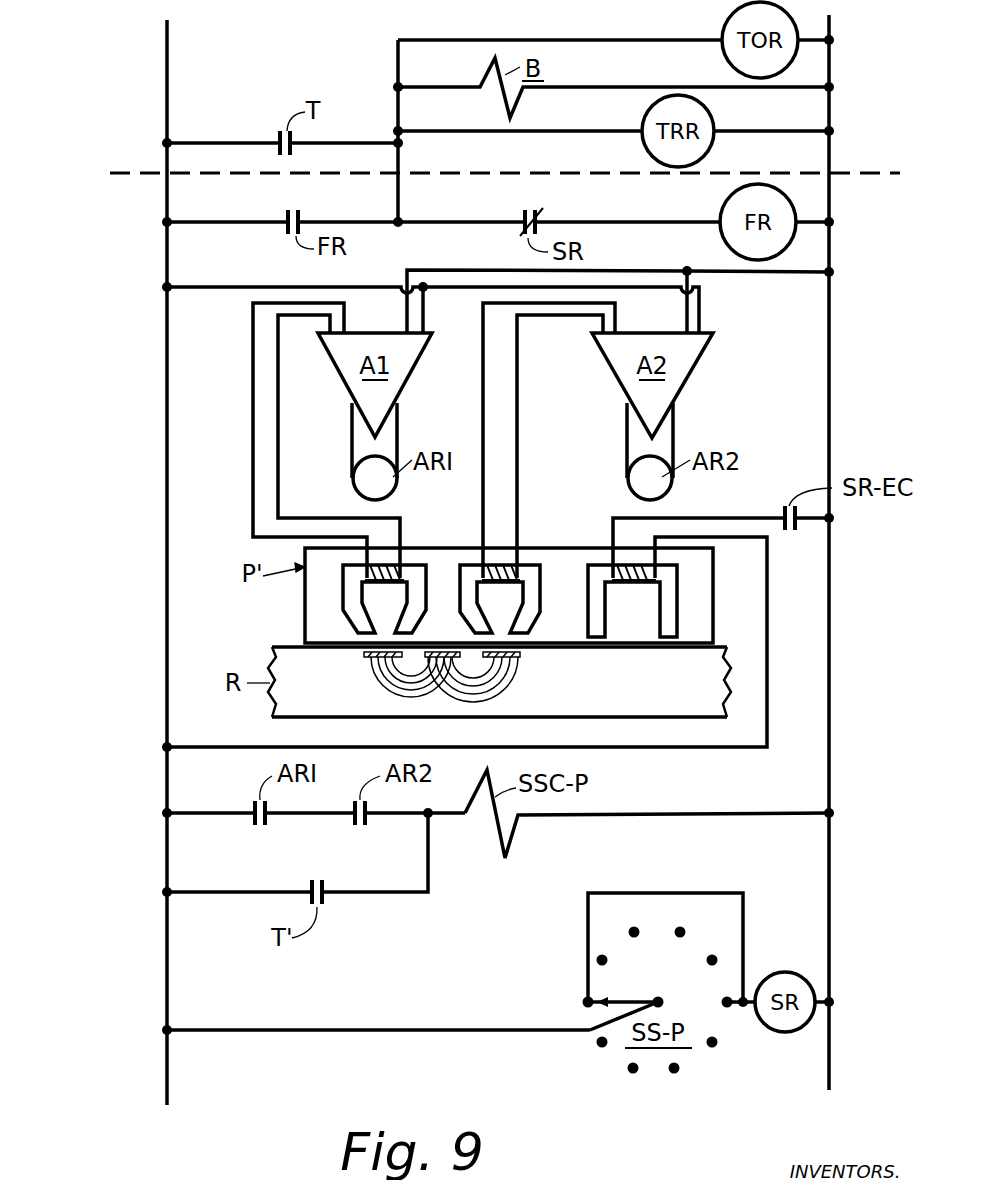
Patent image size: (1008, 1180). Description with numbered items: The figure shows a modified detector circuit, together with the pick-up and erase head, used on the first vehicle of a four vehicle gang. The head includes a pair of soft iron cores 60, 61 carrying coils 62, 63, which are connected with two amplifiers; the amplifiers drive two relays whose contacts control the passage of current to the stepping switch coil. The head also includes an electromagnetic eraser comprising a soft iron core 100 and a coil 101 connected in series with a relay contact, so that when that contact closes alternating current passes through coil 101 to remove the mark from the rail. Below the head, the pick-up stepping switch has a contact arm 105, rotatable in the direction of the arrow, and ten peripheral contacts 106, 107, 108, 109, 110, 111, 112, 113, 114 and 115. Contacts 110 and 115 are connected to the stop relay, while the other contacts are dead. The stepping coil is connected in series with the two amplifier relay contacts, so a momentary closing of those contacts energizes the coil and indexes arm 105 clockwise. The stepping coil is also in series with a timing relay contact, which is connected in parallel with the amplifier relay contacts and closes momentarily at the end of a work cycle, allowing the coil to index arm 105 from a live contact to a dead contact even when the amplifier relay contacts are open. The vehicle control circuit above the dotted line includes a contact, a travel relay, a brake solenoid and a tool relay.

The soft iron core 60 is at (343, 607).
The soft iron core 61 is at (533, 605).
The coil 62 is at (388, 572).
The coil 63 is at (505, 572).
The soft iron core 100 is at (670, 620).
The coil 101 is at (622, 560).
The contact arm 105 is at (600, 1003).
The peripheral contact 106 is at (600, 955).
The peripheral contact 107 is at (634, 926).
The peripheral contact 108 is at (683, 926).
The peripheral contact 109 is at (716, 955).
The peripheral contact 110 is at (727, 1008).
The peripheral contact 111 is at (714, 1047).
The peripheral contact 112 is at (674, 1074).
The peripheral contact 113 is at (630, 1070).
The peripheral contact 114 is at (598, 1043).
The peripheral contact 115 is at (586, 998).